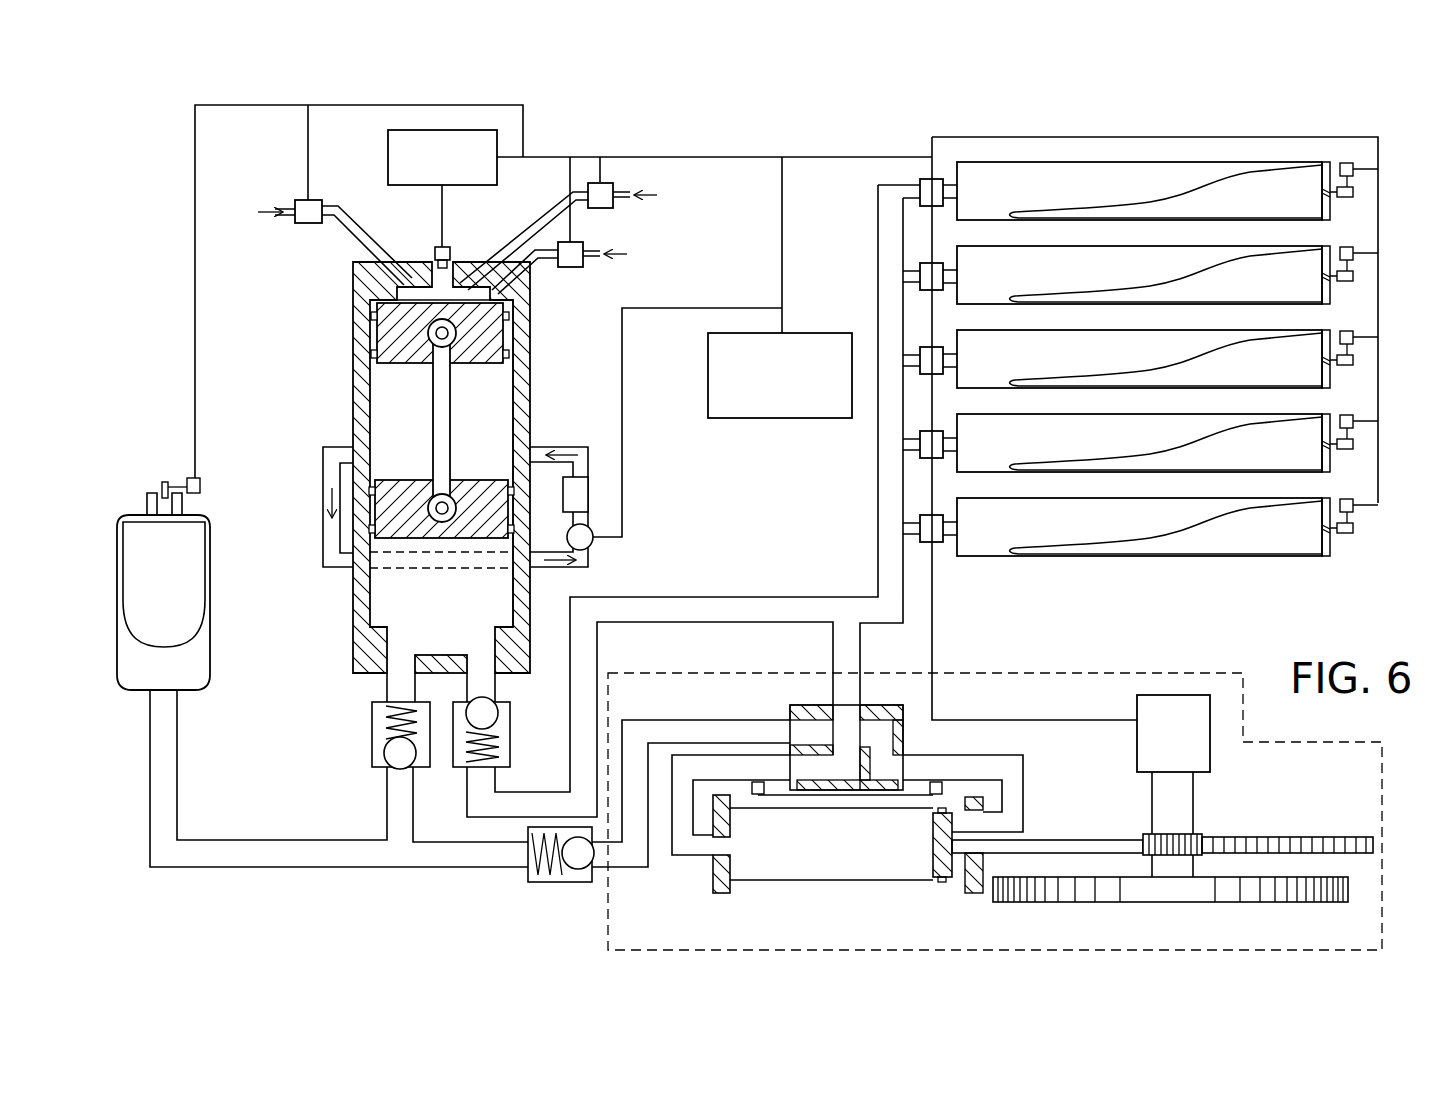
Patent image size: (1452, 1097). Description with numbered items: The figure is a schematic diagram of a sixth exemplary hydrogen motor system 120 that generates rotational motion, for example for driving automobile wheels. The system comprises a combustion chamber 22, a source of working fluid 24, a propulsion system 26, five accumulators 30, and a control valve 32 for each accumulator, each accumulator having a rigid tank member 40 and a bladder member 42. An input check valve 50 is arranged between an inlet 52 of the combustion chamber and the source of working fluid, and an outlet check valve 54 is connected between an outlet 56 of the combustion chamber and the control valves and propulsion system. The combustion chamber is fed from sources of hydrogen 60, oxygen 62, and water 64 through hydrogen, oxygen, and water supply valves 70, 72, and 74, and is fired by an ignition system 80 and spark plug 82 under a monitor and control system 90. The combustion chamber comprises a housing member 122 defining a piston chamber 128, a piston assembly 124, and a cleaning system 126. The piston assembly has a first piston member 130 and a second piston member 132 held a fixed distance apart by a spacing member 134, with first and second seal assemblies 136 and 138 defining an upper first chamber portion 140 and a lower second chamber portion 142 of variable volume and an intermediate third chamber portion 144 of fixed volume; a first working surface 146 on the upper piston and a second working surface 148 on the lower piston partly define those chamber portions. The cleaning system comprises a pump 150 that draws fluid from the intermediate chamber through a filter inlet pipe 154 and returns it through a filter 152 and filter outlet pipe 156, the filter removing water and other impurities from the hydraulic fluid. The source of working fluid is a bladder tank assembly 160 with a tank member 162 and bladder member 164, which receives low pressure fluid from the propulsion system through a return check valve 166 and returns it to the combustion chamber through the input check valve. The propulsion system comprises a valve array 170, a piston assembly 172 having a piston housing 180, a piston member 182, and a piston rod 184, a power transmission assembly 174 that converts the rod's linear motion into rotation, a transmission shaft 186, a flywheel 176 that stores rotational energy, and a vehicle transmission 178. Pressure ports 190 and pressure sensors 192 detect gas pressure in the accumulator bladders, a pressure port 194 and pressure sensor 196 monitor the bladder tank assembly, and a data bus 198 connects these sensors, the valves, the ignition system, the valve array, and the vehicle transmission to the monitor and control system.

The combustion chamber 22 is at (414, 451).
The source of working fluid 24 is at (205, 571).
The propulsion system 26 is at (1382, 775).
The accumulator 30 is at (1090, 497).
The control valve 32 is at (941, 508).
The rigid tank member 40 is at (1117, 498).
The bladder member 42 is at (1225, 514).
The input check valve 50 is at (372, 722).
The inlet 52 is at (378, 690).
The outlet check valve 54 is at (505, 740).
The outlet 56 is at (492, 690).
The source of hydrogen 60 is at (258, 210).
The source of oxygen 62 is at (658, 195).
The source of water 64 is at (627, 254).
The hydrogen supply valve 70 is at (300, 198).
The oxygen supply valve 72 is at (613, 183).
The water supply valve 74 is at (582, 244).
The ignition system 80 is at (388, 150).
The spark plug 82 is at (452, 248).
The monitor and control system 90 is at (820, 333).
The hydrogen motor system 120 is at (1320, 120).
The housing member 122 is at (384, 333).
The piston assembly 124 is at (442, 549).
The cleaning system 126 is at (614, 477).
The piston chamber 128 is at (387, 412).
The first piston member 130 is at (413, 346).
The second piston member 132 is at (398, 533).
The spacing member 134 is at (437, 392).
The first seal assembly 136 is at (508, 374).
The second seal assembly 138 is at (378, 466).
The first chamber portion 140 is at (410, 296).
The second chamber portion 142 is at (423, 643).
The third chamber portion 144 is at (403, 423).
The first working surface 146 is at (470, 288).
The second working surface 148 is at (413, 543).
The pump 150 is at (592, 547).
The filter 152 is at (590, 495).
The filter inlet pipe 154 is at (328, 532).
The filter outlet pipe 156 is at (535, 440).
The bladder tank assembly 160 is at (220, 596).
The tank member 162 is at (190, 625).
The bladder member 164 is at (170, 662).
The return check valve 166 is at (560, 884).
The valve array 170 is at (828, 700).
The piston assembly 172 is at (706, 888).
The power transmission assembly 174 is at (1217, 826).
The flywheel 176 is at (1248, 897).
The vehicle transmission 178 is at (1137, 742).
The piston housing 180 is at (802, 859).
The piston member 182 is at (935, 862).
The piston rod 184 is at (1040, 836).
The transmission shaft 186 is at (1152, 798).
The pressure port 190 is at (1355, 526).
The pressure sensor 192 is at (1350, 499).
The pressure port 194 is at (163, 480).
The pressure sensor 196 is at (189, 476).
The data bus 198 is at (735, 156).